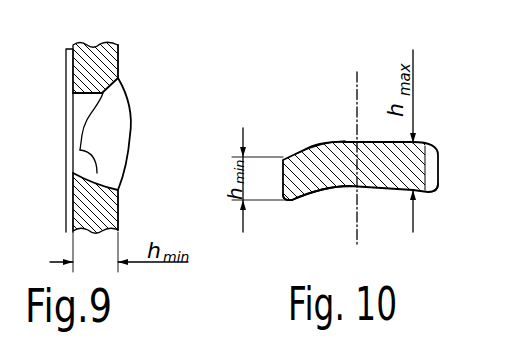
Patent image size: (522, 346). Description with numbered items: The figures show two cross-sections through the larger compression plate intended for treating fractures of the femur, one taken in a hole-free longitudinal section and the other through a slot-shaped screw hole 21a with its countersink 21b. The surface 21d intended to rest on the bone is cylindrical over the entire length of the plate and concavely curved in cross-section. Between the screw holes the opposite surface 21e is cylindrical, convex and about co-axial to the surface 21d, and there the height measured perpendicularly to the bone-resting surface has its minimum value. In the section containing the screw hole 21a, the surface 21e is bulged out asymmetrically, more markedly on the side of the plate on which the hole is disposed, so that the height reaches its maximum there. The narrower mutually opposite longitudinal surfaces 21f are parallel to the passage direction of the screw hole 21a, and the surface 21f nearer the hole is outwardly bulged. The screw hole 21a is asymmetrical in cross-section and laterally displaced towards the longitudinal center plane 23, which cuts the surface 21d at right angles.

In FIG. 9, the screw holes 21a is at (86, 96).
In FIG. 10, the screw holes 21a is at (407, 150).
In FIG. 9, the countersinks 21b is at (79, 152).
In FIG. 10, the countersinks 21b is at (338, 150).
In FIG. 9, the surface intended to rest on a bone 21d is at (67, 63).
In FIG. 10, the surface intended to rest on a bone 21d is at (317, 197).
In FIG. 9, the surface opposite the bone-resting surface 21e is at (118, 62).
In FIG. 10, the surface opposite the bone-resting surface 21e is at (312, 152).
In FIG. 10, the longitudinal surfaces 21f is at (273, 193).
In FIG. 10, the longitudinal center plane 23 is at (358, 93).